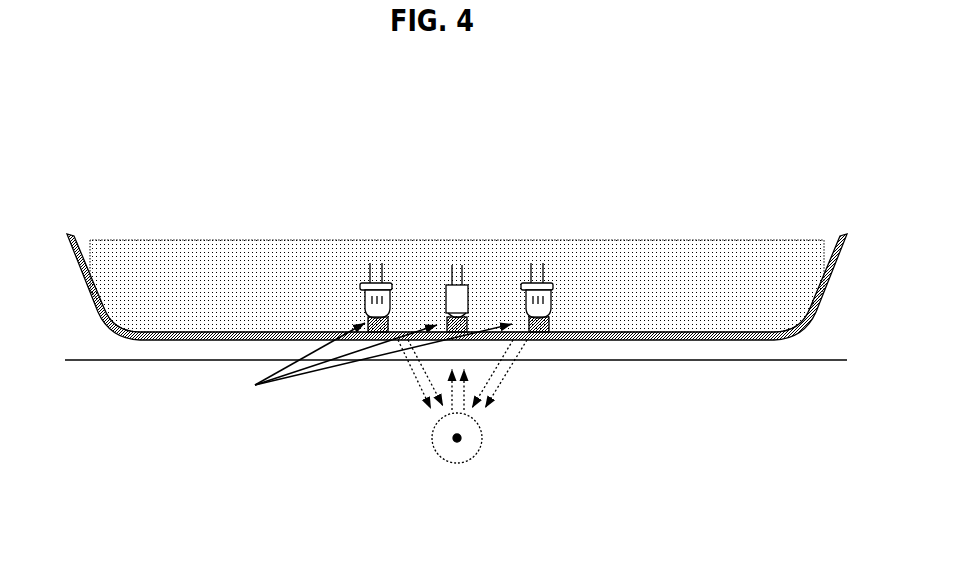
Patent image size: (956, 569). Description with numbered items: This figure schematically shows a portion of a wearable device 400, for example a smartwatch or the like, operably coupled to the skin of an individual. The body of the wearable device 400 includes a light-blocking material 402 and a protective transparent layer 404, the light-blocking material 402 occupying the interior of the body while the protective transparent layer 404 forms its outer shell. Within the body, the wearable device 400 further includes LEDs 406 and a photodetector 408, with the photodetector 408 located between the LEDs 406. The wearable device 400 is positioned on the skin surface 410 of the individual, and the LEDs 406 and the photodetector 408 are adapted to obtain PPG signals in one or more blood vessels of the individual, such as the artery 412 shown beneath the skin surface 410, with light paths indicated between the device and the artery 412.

The wearable device 400 is at (628, 145).
The light-blocking material 402 is at (678, 263).
The protective transparent layer 404 is at (82, 237).
The LEDs 406 is at (514, 278).
The photodetector 408 is at (473, 289).
The skin surface 410 is at (138, 367).
The artery 412 is at (462, 444).